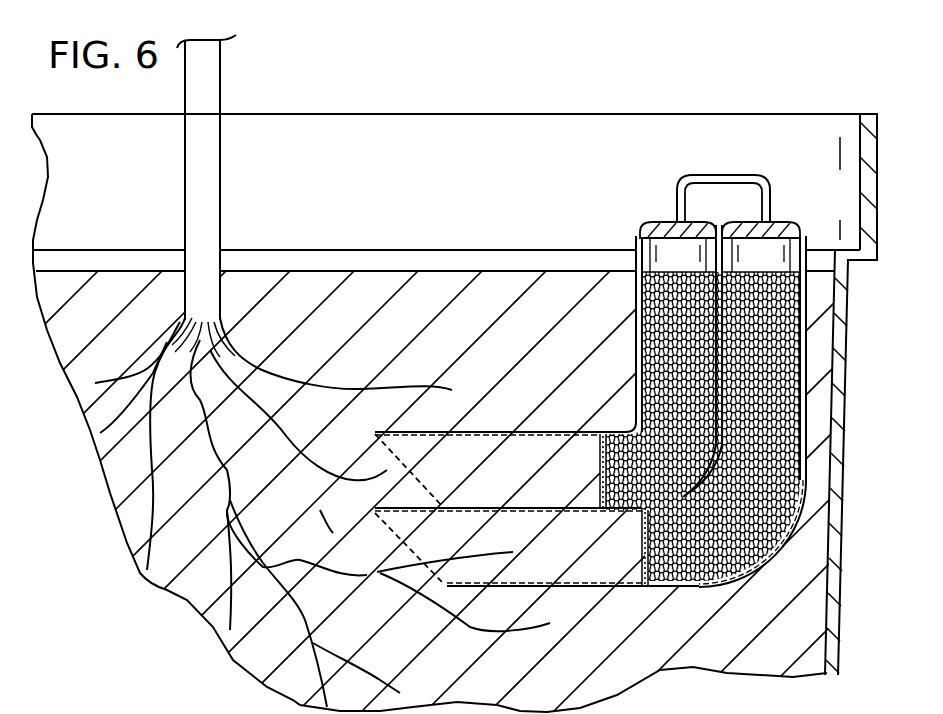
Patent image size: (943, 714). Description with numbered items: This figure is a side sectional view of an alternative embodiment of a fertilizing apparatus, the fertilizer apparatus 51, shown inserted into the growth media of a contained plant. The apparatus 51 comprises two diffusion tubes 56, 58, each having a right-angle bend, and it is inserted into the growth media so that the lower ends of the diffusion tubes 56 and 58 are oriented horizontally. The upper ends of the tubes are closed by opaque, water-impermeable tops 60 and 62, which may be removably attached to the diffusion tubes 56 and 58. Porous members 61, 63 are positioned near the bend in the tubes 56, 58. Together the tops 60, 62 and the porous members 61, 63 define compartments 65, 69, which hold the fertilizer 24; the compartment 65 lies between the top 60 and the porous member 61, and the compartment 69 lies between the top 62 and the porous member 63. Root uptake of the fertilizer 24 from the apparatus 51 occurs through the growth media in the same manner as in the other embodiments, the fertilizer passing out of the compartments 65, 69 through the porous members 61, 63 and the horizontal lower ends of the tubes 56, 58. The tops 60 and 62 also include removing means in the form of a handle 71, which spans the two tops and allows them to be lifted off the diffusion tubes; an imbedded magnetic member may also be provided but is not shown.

The fertilizer apparatus 51 is at (706, 339).
The handle 71 is at (712, 175).
The top 60 is at (638, 205).
The top 62 is at (787, 205).
The compartment 65 is at (650, 237).
The compartment 69 is at (760, 272).
The fertilizer 24 is at (650, 332).
The diffusion tube 56 is at (415, 430).
The diffusion tube 58 is at (460, 467).
The porous member 61 is at (600, 437).
The porous member 63 is at (643, 514).